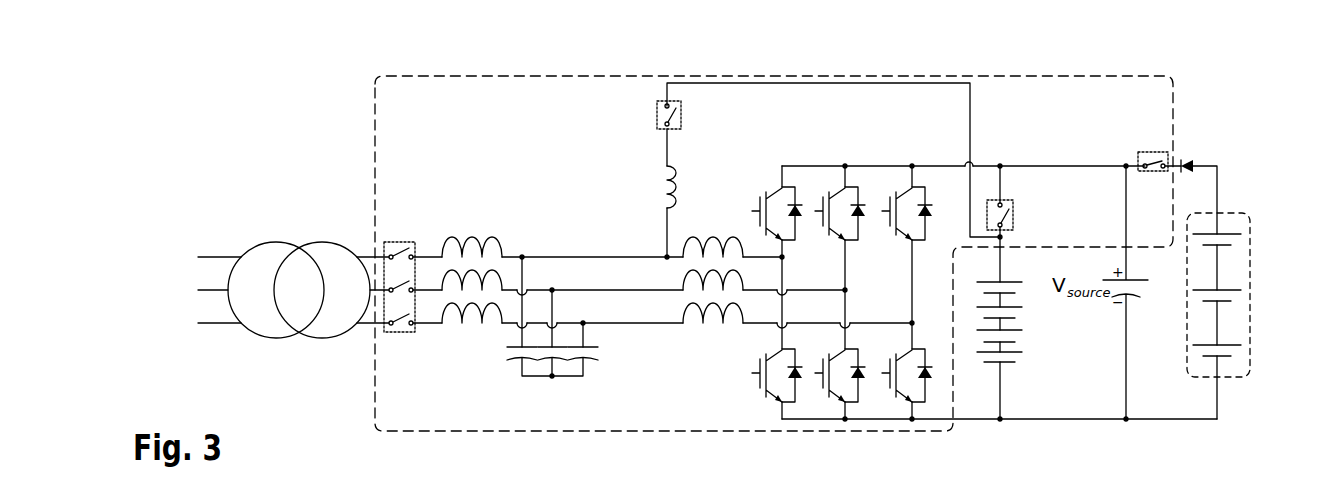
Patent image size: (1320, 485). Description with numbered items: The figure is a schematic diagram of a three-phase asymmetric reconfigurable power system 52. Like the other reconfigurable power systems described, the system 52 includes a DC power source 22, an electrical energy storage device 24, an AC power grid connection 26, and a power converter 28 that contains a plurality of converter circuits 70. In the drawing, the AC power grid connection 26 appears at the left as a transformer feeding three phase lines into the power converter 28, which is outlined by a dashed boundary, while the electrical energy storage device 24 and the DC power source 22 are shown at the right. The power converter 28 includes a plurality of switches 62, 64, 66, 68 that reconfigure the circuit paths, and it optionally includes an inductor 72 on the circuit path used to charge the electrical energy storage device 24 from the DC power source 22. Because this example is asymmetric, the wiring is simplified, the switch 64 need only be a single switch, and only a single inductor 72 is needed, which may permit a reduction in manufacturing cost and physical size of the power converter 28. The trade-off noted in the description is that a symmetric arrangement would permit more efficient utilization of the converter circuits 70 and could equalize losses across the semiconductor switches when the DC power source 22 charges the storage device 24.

The 3-phase asymmetric reconfigurable power system 52 is at (246, 142).
The AC power grid connection 26 is at (245, 230).
The power converter 28 is at (375, 163).
The switch 66 is at (393, 333).
The switch 64 is at (656, 112).
The inductor 72 is at (656, 190).
The converter circuits 70 is at (733, 364).
The switch 62 is at (1008, 202).
The electrical energy storage device 24 is at (1038, 360).
The switch 68 is at (1156, 174).
The DC power source 22 is at (1252, 283).